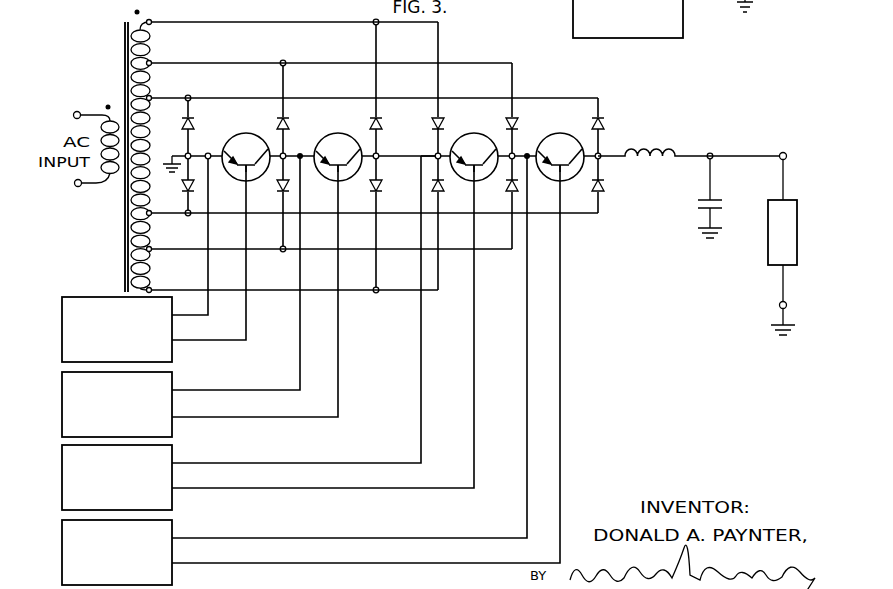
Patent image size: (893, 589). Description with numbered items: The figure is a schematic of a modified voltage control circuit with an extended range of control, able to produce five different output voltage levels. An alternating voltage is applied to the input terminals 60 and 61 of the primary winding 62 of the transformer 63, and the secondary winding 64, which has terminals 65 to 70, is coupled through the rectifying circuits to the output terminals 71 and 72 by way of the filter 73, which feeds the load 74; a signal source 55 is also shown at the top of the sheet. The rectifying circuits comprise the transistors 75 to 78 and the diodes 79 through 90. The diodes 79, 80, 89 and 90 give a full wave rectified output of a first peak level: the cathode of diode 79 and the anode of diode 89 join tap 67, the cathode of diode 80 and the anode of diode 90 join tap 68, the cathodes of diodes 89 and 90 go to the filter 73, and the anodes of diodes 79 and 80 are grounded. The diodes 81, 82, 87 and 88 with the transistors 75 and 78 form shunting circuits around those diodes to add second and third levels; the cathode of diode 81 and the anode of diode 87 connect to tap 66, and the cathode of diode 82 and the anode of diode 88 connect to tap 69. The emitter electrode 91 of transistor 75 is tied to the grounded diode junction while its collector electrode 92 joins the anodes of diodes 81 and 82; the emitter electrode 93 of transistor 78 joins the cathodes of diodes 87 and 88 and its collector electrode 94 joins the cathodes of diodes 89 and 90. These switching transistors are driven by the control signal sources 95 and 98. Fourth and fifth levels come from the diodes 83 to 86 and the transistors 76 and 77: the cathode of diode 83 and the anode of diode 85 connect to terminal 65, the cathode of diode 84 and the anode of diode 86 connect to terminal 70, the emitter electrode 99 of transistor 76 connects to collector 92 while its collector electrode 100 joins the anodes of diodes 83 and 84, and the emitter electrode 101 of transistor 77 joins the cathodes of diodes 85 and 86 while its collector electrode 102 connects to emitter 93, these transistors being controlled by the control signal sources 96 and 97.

The signal source 55 is at (683, 12).
The input terminal 60 is at (89, 107).
The input terminal 61 is at (88, 191).
The primary winding 62 is at (112, 172).
The transformer 63 is at (99, 45).
The secondary winding 64 is at (152, 156).
The terminal 65 is at (152, 21).
The terminal tap 66 is at (152, 62).
The terminal tap 67 is at (152, 97).
The terminal tap 68 is at (152, 214).
The terminal tap 69 is at (152, 248).
The terminal 70 is at (152, 289).
The output terminal 71 is at (782, 167).
The output terminal 72 is at (786, 305).
The filter 73 is at (665, 200).
The load 74 is at (768, 237).
The transistor 75 is at (240, 144).
The transistor 76 is at (335, 144).
The transistor 77 is at (477, 142).
The transistor 78 is at (559, 145).
The diode 79 is at (195, 123).
The diode 80 is at (186, 189).
The diode 81 is at (295, 118).
The diode 82 is at (281, 189).
The diode 83 is at (383, 121).
The diode 84 is at (383, 187).
The diode 85 is at (434, 125).
The diode 86 is at (445, 189).
The diode 87 is at (519, 122).
The diode 88 is at (510, 189).
The diode 89 is at (605, 124).
The diode 90 is at (605, 187).
The emitter electrode 91 is at (230, 151).
The collector electrode 92 is at (262, 147).
The emitter electrode 93 is at (550, 152).
The collector electrode 94 is at (574, 147).
The source of control signals 95 is at (62, 345).
The control signal source 96 is at (62, 419).
The control signal source 97 is at (62, 492).
The source of control signals 98 is at (62, 567).
The emitter electrode 99 is at (302, 153).
The collector electrode 100 is at (348, 147).
The emitter electrode 101 is at (457, 143).
The collector electrode 102 is at (470, 121).